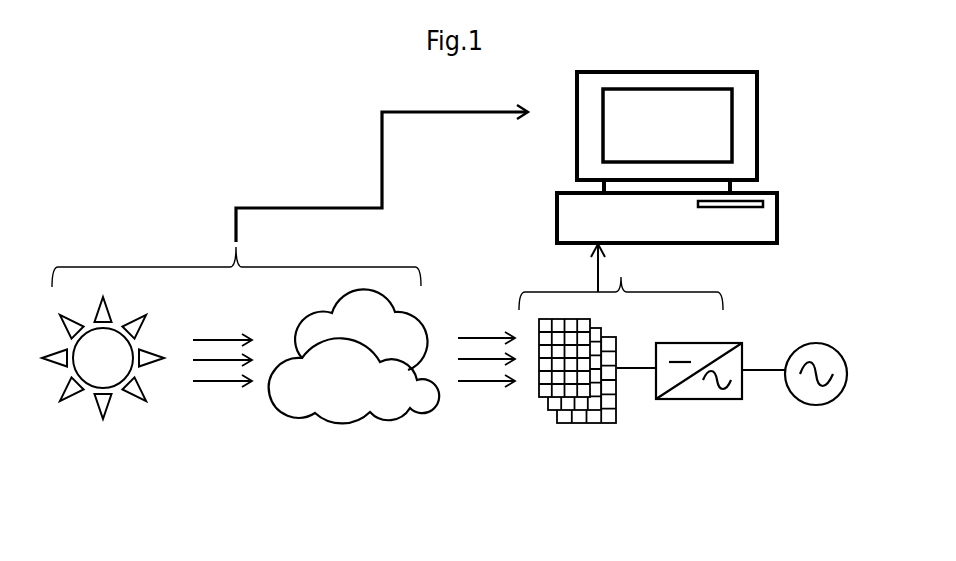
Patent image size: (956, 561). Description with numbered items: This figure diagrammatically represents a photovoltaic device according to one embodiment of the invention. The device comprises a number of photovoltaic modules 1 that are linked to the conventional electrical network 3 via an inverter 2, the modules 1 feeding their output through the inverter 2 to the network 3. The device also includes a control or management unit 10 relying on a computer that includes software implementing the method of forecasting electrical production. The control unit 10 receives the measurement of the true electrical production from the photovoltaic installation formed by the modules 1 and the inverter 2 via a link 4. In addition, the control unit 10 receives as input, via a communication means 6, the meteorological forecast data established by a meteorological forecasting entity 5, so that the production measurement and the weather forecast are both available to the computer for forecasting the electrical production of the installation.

The photovoltaic modules 1 is at (572, 425).
The inverter 2 is at (692, 399).
The conventional electrical network 3 is at (812, 405).
The link 4 is at (598, 268).
The meteorological forecasting entity 5 is at (165, 266).
The communication means 6 is at (317, 207).
The control or management unit 10 is at (777, 212).